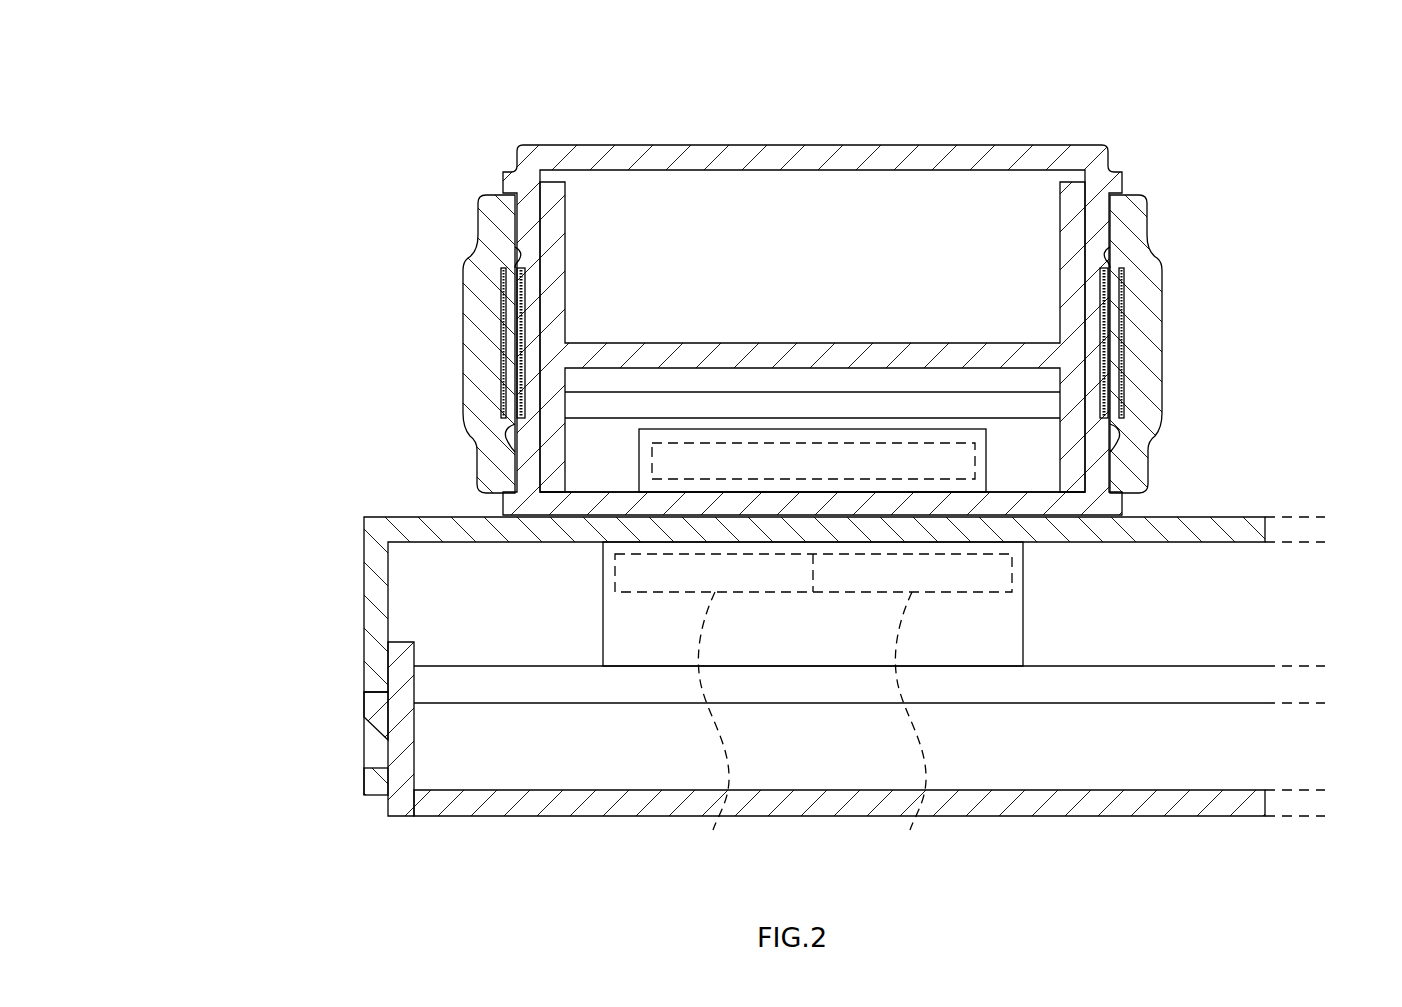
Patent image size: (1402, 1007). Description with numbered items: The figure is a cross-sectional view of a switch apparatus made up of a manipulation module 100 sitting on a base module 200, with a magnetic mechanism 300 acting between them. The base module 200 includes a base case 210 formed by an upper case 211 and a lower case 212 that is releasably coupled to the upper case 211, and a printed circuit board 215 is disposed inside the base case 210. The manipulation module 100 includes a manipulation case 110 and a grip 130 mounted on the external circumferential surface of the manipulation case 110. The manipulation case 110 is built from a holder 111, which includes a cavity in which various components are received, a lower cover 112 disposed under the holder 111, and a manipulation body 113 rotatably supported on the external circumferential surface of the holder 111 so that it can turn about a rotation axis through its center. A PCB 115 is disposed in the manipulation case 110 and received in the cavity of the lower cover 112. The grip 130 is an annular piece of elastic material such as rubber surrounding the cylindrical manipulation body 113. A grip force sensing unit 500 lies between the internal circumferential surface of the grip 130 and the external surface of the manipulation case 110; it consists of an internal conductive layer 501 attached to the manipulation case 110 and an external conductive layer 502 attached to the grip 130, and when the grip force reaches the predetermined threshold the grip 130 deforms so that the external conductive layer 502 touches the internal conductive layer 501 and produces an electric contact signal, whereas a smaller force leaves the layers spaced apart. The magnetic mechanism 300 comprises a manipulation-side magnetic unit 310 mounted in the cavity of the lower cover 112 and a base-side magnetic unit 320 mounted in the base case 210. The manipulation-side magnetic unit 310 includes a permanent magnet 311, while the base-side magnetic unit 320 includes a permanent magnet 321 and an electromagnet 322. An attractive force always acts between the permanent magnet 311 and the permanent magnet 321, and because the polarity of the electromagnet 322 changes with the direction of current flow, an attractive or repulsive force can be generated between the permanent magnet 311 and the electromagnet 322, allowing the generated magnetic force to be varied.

The manipulation module 100 is at (821, 270).
The manipulation case 110 is at (812, 293).
The holder 111 is at (553, 228).
The lower cover 112 is at (1070, 503).
The manipulation body 113 is at (813, 145).
The PCB 115 is at (585, 405).
The grip 130 is at (1163, 312).
The grip force sensing unit 500 is at (864, 299).
The internal conductive layer 501 is at (1112, 372).
The external conductive layer 502 is at (1127, 342).
The base module 200 is at (777, 649).
The base case 210 is at (798, 693).
The upper case 211 is at (386, 657).
The lower case 212 is at (838, 797).
The printed circuit board 215 is at (1147, 683).
The magnetic mechanism 300 is at (749, 641).
The manipulation-side magnetic unit 310 is at (751, 460).
The permanent magnet 311 is at (980, 456).
The base-side magnetic unit 320 is at (660, 698).
The permanent magnet 321 is at (714, 723).
The electromagnet 322 is at (911, 723).